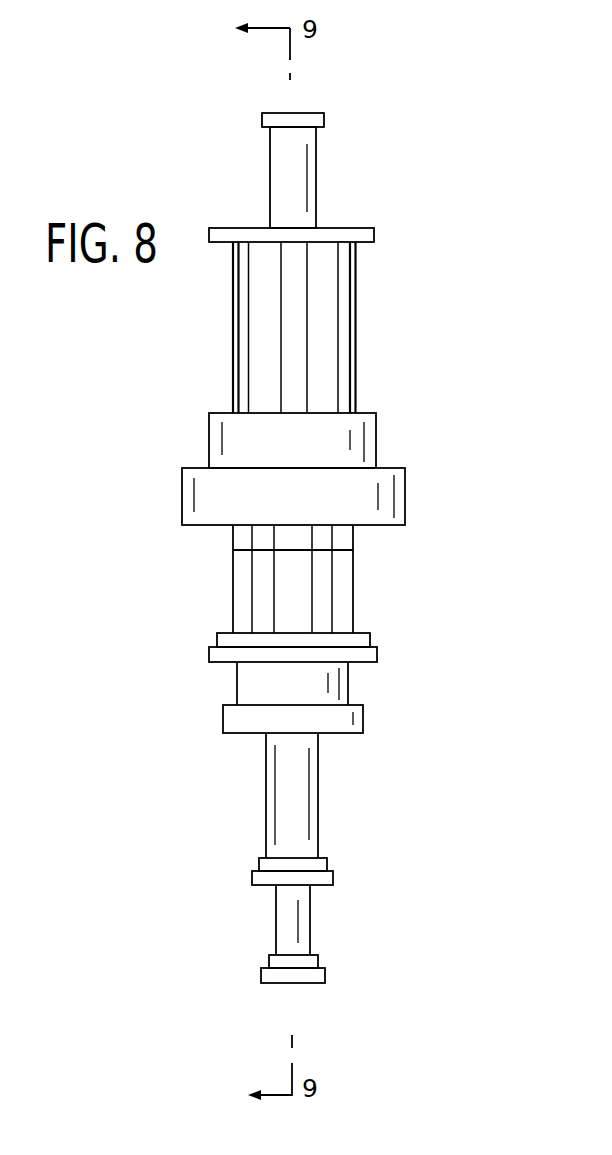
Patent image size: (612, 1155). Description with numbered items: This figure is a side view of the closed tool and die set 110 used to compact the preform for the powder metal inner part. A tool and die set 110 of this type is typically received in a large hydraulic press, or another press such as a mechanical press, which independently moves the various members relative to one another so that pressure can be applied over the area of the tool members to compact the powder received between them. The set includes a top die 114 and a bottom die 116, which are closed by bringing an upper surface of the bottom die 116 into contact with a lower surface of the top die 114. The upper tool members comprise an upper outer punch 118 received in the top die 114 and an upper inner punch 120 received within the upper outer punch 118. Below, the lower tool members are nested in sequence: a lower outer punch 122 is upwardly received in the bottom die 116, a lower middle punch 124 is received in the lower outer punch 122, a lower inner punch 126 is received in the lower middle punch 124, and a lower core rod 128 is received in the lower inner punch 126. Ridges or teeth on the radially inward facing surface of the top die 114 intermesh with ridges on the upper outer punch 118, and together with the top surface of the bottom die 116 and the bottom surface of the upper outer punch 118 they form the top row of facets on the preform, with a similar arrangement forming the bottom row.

The tool and die set 110 is at (474, 134).
The upper inner punch 120 is at (270, 176).
The upper outer punch 118 is at (327, 303).
The top die 114 is at (377, 435).
The bottom die 116 is at (405, 497).
The lower outer punch 122 is at (353, 580).
The lower middle punch 124 is at (313, 690).
The lower inner punch 126 is at (293, 797).
The lower core rod 128 is at (288, 923).